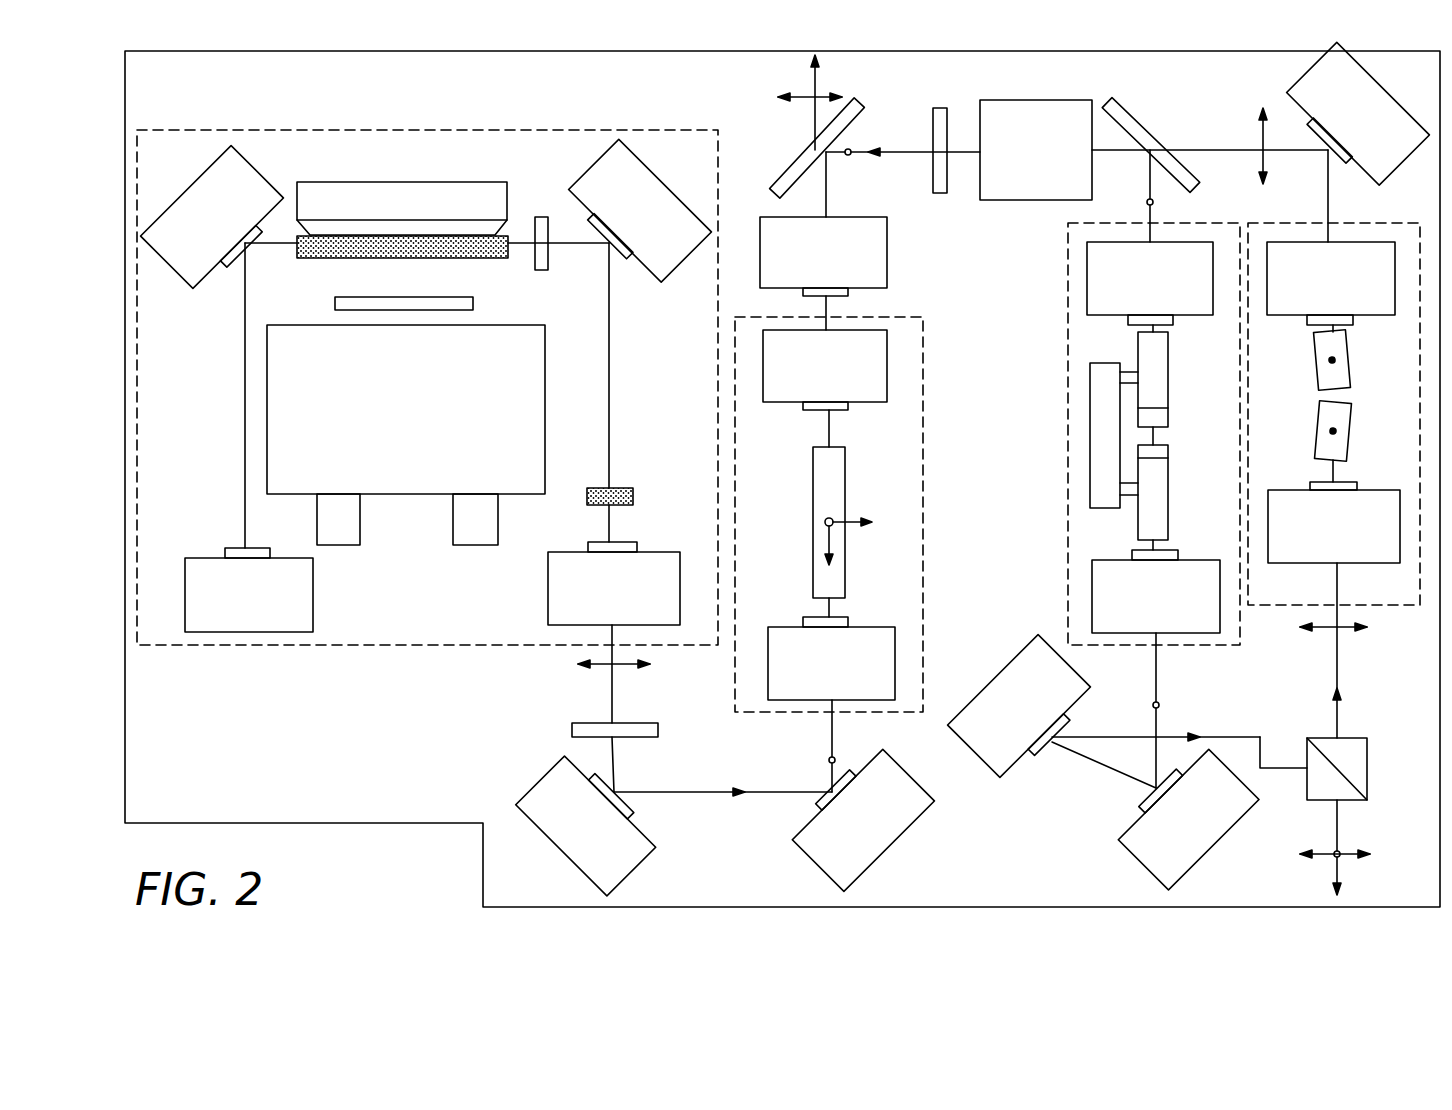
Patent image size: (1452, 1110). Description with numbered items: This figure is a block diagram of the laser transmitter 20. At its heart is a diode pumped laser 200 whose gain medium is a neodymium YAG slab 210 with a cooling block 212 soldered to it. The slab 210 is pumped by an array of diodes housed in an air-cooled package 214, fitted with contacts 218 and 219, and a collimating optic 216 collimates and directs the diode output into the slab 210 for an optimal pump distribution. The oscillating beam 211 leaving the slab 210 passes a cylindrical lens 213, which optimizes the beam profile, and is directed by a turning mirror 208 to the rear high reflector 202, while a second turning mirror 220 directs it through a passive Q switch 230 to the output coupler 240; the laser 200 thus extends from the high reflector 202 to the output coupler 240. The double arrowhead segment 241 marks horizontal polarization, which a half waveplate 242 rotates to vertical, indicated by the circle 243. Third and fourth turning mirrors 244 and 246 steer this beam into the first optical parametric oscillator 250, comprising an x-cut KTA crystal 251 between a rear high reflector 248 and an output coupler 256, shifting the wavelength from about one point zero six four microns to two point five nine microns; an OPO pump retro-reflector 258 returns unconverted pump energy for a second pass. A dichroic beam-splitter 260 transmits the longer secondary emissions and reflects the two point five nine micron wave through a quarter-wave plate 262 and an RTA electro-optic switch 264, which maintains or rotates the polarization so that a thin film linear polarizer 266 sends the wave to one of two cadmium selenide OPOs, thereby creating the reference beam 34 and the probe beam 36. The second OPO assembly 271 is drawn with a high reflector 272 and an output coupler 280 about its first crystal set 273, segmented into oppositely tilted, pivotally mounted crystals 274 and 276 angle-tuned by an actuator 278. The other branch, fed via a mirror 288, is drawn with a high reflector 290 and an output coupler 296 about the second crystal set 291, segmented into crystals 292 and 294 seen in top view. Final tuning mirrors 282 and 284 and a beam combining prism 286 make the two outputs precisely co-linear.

The laser system 20 is at (322, 826).
The reference beam 34 is at (1100, 737).
The probe beam 36 is at (1335, 728).
The diode pumped laser 200 is at (170, 648).
The rear high reflector 202 is at (205, 558).
The turning mirror 208 is at (265, 172).
The Nd:YAG slab 210 is at (297, 252).
The oscillating beam 211 is at (568, 246).
The slab cooler 212 is at (445, 182).
The cylindrical lens 213 is at (535, 258).
The air-cooled package 214 is at (547, 385).
The collimating optic 216 is at (473, 303).
The contact 218 is at (362, 518).
The contact 219 is at (500, 518).
The second turning mirror 220 is at (588, 168).
The passive Q switch 230 is at (634, 497).
The output coupler 240 is at (548, 583).
The short line segment with double arrowheads 241 is at (620, 668).
The half waveplate 242 is at (572, 730).
The circle 243 is at (829, 761).
The third turning mirror 244 is at (648, 860).
The fourth turning mirror 246 is at (877, 866).
The rear high reflector 248 is at (896, 668).
The first optical parametric oscillator 250 is at (927, 575).
The x-cut crystal 251 is at (846, 585).
The output coupler 256 is at (890, 372).
The OPO pump retro-reflector 258 is at (890, 270).
The dichroic beam-splitter 260 is at (797, 162).
The quarter-wave plate 262 is at (942, 108).
The RTA electro-optic switch 264 is at (1033, 200).
The thin film linear polarizer 266 is at (1125, 104).
The second OPO assembly 271 is at (1066, 560).
The CdSe OPO high reflector 272 is at (1087, 282).
The first crystal set 273 is at (1175, 372).
The crystal 274 is at (1170, 393).
The crystal 276 is at (1170, 480).
The actuator 278 is at (1090, 398).
The CdSe OPO output coupler 280 is at (1092, 597).
The final tuning mirror 282 is at (1130, 856).
The final tuning mirror 284 is at (1015, 770).
The beam combining prism 286 is at (1368, 755).
The mirror 288 is at (1308, 72).
The CdSe OPO high reflector 290 is at (1340, 242).
The second crystal set 291 is at (1303, 222).
The crystal 292 is at (1316, 372).
The crystal 294 is at (1348, 448).
The CdSe OPO output coupler 296 is at (1283, 492).